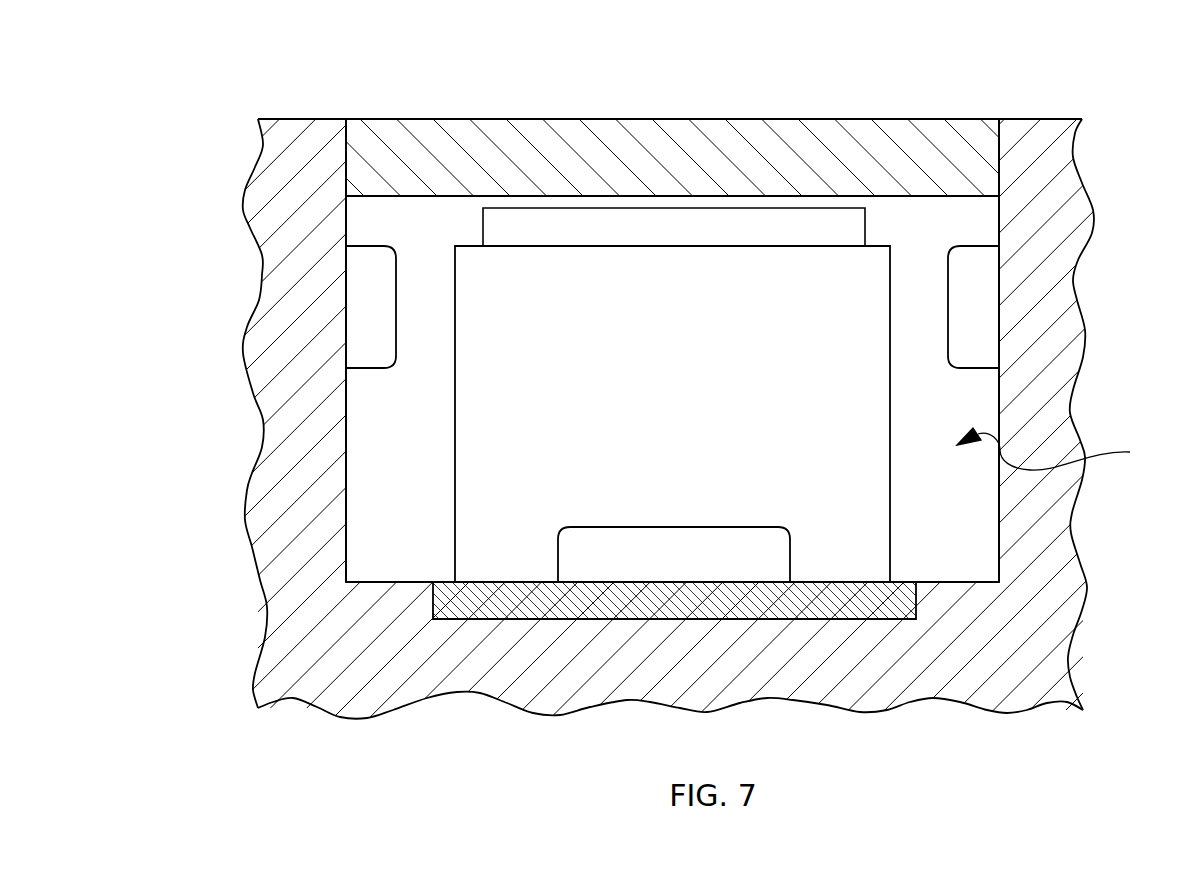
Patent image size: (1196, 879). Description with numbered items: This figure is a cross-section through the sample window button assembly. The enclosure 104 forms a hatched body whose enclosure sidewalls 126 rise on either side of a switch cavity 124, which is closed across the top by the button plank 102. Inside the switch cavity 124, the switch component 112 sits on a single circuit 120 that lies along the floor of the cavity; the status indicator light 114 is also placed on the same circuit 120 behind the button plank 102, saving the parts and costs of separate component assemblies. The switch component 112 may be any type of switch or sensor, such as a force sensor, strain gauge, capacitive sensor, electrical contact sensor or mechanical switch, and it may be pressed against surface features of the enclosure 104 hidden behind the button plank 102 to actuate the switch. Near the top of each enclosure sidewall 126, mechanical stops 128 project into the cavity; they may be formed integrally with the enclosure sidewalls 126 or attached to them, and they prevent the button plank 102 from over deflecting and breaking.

The button plank 102 is at (672, 150).
The enclosure 104 is at (340, 652).
The switch component 112 is at (816, 267).
The status indicator light 114 is at (752, 555).
The circuit 120 is at (623, 583).
The switch cavity 124 is at (1062, 449).
The enclosure sidewalls 126 is at (343, 435).
The mechanical stops 128 is at (365, 282).